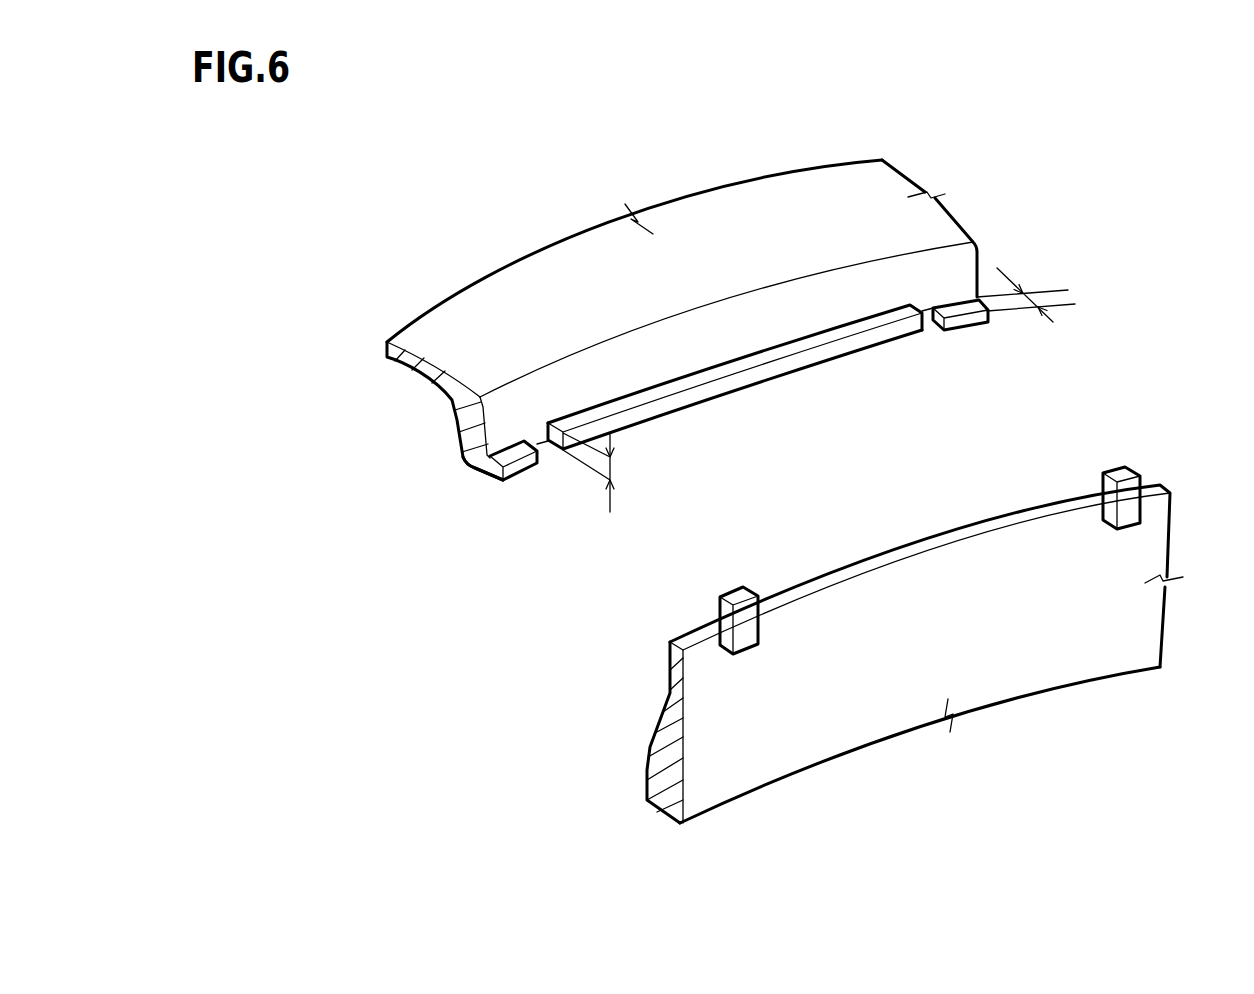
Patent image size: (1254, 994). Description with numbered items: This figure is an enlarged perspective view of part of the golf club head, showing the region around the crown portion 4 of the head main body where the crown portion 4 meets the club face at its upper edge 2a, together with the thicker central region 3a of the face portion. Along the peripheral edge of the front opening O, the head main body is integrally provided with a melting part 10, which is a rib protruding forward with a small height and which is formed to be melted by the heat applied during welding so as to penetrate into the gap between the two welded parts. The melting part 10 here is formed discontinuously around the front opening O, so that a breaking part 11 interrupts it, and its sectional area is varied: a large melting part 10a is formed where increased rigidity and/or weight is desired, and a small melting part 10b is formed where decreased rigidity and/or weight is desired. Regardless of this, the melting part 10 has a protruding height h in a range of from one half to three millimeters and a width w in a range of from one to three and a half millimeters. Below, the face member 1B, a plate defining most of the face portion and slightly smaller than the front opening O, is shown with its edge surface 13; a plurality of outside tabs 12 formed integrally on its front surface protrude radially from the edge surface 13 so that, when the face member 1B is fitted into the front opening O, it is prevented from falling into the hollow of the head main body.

The crown portion 4 is at (583, 283).
The upper edge 2a is at (740, 294).
The thicker central region 3a is at (948, 267).
The protruding height h is at (1026, 295).
The melting part 10 is at (788, 479).
The large melting part 10a is at (773, 363).
The small melting part 10b is at (972, 318).
The breaking part 11 is at (933, 337).
The width w is at (600, 472).
The front opening O is at (473, 467).
The face member 1B is at (993, 662).
The edge surface 13 is at (923, 548).
The outside tab 12 is at (728, 574).